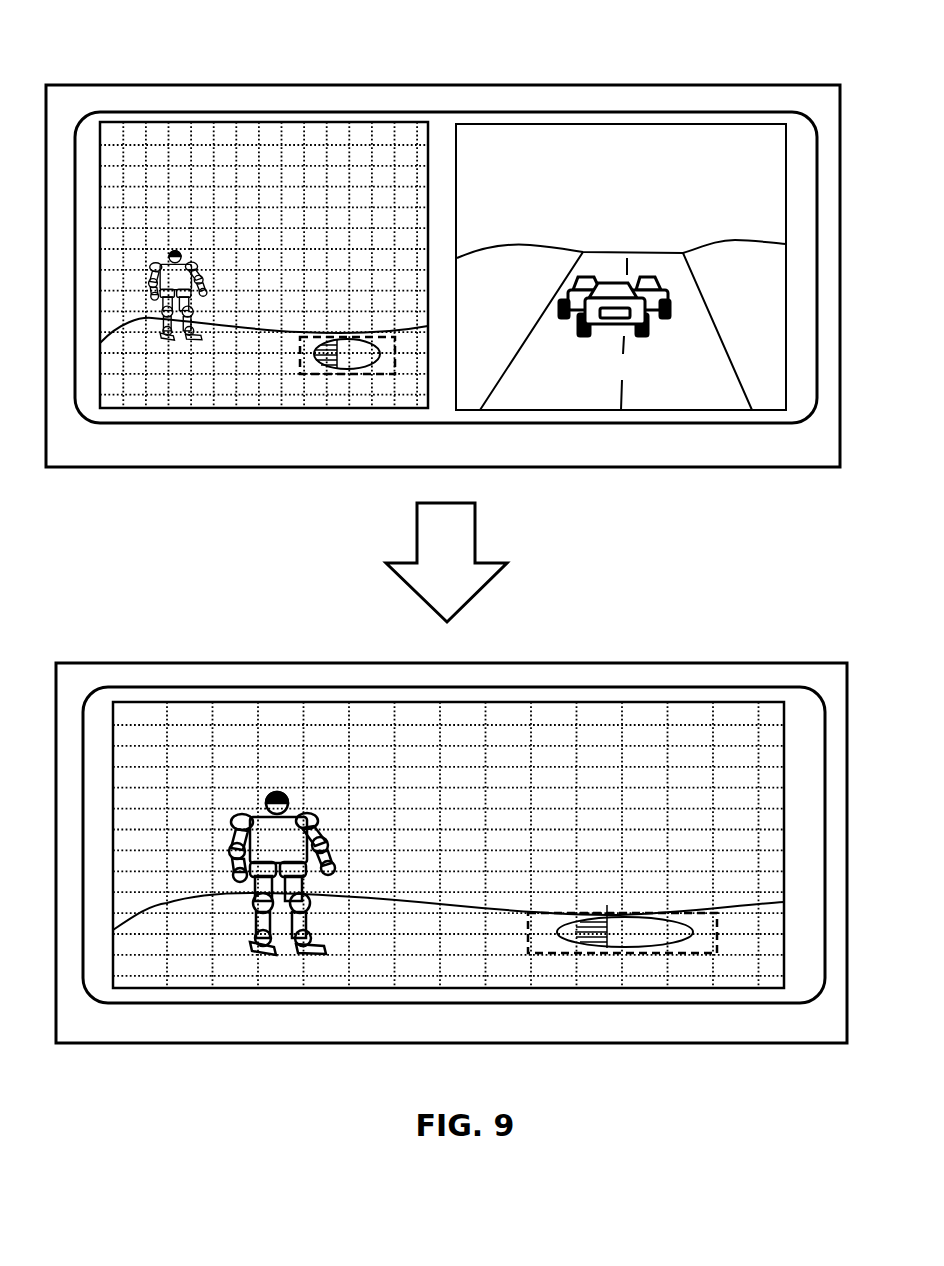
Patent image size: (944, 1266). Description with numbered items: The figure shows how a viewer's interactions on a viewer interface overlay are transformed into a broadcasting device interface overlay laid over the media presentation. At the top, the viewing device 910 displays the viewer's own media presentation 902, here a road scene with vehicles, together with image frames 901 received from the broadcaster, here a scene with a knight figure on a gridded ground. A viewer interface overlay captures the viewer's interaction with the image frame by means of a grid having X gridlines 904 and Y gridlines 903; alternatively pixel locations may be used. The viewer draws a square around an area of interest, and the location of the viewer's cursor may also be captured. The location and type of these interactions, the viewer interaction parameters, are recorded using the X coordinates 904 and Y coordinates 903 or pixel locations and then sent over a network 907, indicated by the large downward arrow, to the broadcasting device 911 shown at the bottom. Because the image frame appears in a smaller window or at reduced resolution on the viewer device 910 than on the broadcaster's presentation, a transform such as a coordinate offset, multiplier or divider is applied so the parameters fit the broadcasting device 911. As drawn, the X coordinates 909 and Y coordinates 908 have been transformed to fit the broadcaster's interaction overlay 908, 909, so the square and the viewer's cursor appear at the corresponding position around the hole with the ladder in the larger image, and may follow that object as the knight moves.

The image frames 901 is at (203, 133).
The viewer's media presentation 902 is at (596, 176).
The Y gridlines 903 is at (413, 133).
The X gridlines 904 is at (422, 393).
The network 907 is at (483, 562).
The Y grid coordinates 908 is at (762, 710).
The X grid coordinates 909 is at (770, 975).
The viewing device 910 is at (588, 102).
The broadcasting device 911 is at (207, 1030).